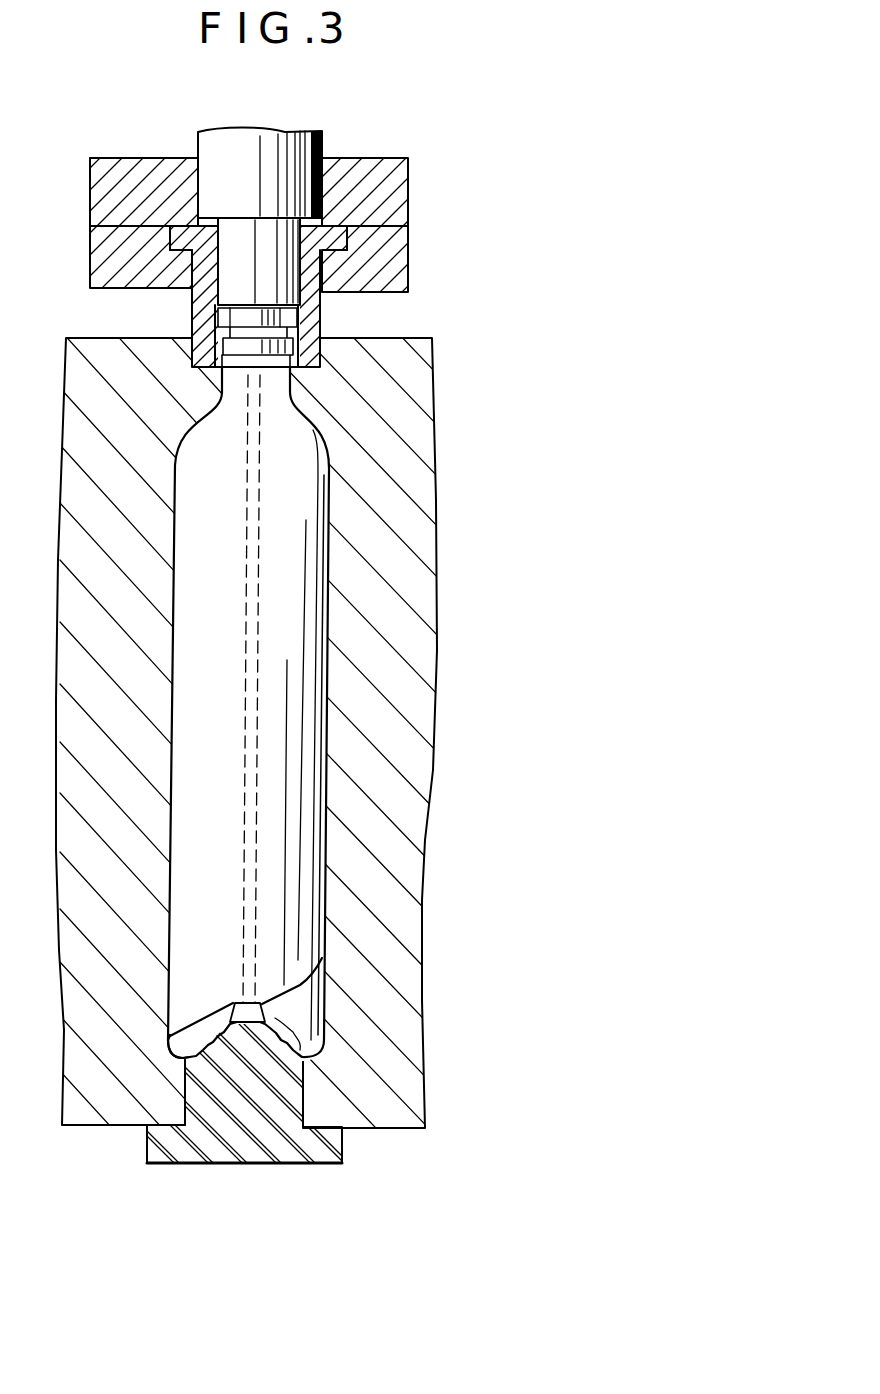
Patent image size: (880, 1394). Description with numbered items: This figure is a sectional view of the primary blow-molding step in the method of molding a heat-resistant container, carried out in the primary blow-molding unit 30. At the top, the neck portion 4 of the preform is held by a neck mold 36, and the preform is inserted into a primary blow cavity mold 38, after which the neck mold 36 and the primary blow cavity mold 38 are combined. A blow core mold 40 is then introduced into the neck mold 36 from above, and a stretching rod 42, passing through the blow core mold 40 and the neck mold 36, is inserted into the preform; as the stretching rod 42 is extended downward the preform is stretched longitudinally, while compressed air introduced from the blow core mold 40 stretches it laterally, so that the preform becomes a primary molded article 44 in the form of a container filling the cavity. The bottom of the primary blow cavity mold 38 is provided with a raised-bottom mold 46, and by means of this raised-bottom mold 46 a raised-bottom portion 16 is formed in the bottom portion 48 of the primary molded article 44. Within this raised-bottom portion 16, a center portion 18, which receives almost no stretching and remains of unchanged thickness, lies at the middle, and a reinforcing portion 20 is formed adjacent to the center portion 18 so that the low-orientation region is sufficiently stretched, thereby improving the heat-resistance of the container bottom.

The primary blow-molding unit 30 is at (488, 136).
The blow core mold 40 is at (323, 147).
The neck mold 36 is at (310, 288).
The neck portion 4 is at (322, 338).
The primary blow cavity mold 38 is at (403, 678).
The stretching rod 42 is at (258, 556).
The primary molded article 44 is at (302, 847).
The raised-bottom portion 16 is at (259, 1040).
The center portion 18 is at (262, 1020).
The reinforcing portion 20 is at (308, 1027).
The bottom portion 48 is at (178, 1065).
The raised-bottom mold 46 is at (202, 1147).